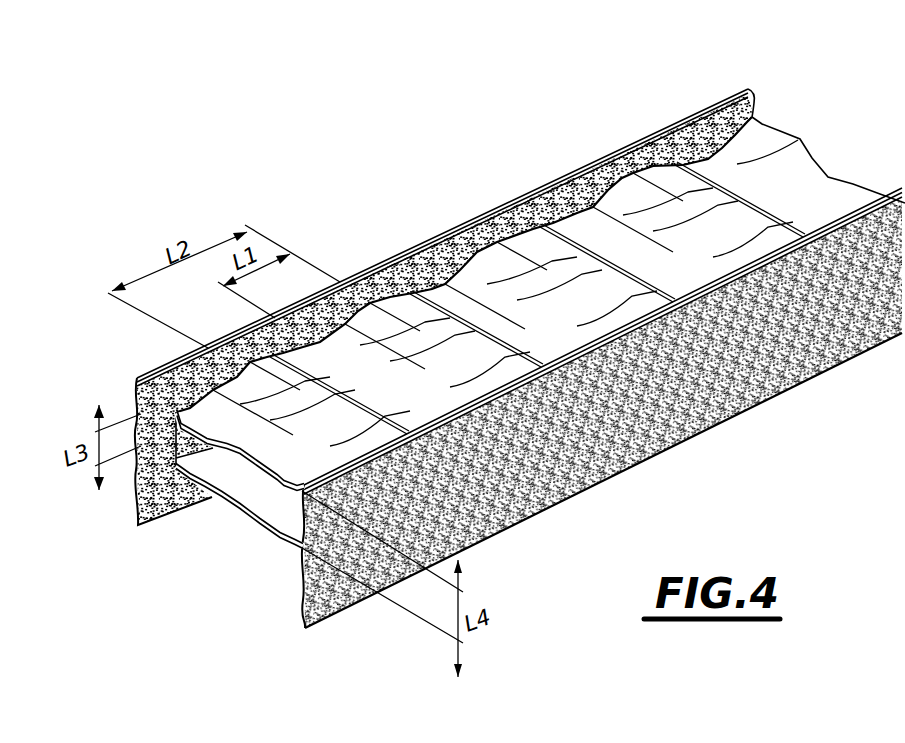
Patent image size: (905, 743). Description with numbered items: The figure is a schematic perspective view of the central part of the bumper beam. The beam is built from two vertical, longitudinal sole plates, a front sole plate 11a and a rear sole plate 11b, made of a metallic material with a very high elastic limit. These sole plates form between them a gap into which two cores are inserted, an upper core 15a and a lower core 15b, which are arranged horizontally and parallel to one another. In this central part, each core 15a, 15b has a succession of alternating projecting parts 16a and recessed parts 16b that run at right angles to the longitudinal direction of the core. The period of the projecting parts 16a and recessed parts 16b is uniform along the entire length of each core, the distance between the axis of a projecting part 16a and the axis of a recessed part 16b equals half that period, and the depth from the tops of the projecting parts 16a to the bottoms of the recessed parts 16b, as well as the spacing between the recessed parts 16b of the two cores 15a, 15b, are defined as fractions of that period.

The front sole plate 11a is at (153, 390).
The rear sole plate 11b is at (722, 378).
The upper core 15a is at (556, 208).
The lower core 15b is at (240, 521).
The projecting parts 16a is at (538, 263).
The recessed parts 16b is at (652, 262).